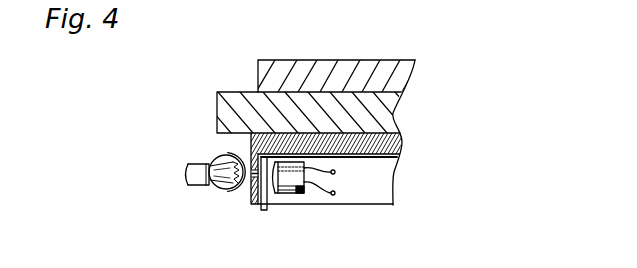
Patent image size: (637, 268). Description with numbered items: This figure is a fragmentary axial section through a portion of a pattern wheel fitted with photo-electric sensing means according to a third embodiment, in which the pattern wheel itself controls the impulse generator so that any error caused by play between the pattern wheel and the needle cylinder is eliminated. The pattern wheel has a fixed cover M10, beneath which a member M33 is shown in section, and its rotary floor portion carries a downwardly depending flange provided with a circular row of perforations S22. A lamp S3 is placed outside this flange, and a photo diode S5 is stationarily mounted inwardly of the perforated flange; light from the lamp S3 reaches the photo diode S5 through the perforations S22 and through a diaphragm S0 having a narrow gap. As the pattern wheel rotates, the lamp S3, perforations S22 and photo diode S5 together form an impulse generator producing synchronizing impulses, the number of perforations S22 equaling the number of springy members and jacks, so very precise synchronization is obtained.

The fixed cover M10 is at (406, 83).
The mounting block M33 is at (222, 116).
The diaphragm S0 is at (268, 210).
The photo diode S5 is at (297, 194).
The lamp S3 is at (220, 190).
The perforations S22 is at (248, 183).